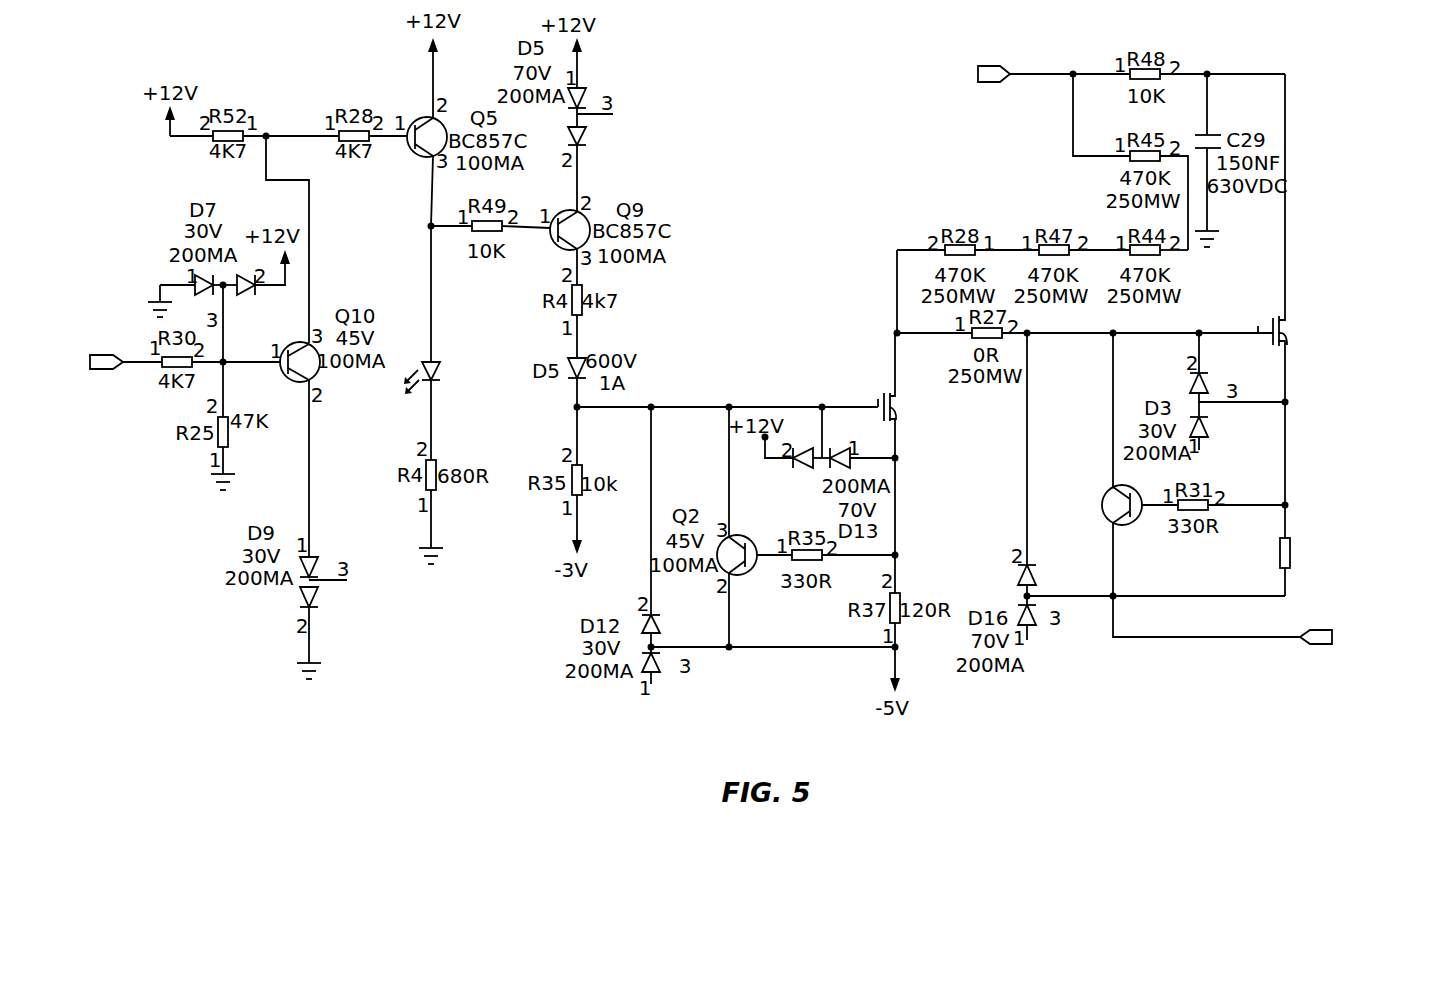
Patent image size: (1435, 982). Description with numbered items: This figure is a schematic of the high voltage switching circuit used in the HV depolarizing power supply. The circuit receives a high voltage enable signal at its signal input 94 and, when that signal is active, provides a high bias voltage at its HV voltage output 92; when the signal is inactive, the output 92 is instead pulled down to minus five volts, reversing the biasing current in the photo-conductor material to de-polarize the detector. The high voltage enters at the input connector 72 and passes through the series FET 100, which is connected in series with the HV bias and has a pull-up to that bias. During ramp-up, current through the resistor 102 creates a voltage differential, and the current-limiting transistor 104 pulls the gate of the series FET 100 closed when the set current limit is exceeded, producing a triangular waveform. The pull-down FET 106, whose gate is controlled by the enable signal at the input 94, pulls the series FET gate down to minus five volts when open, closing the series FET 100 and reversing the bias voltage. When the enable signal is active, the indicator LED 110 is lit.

The high voltage input connector HV_+ 72 is at (990, 66).
The HV voltage output 92 is at (1322, 645).
The signal input 94 is at (92, 370).
The Q5 FET 100 is at (1277, 329).
The resistor 102 is at (1293, 543).
The Q7 transistor 104 is at (1118, 525).
The Q3 FET 106 is at (903, 408).
The indicator LED 110 is at (422, 385).